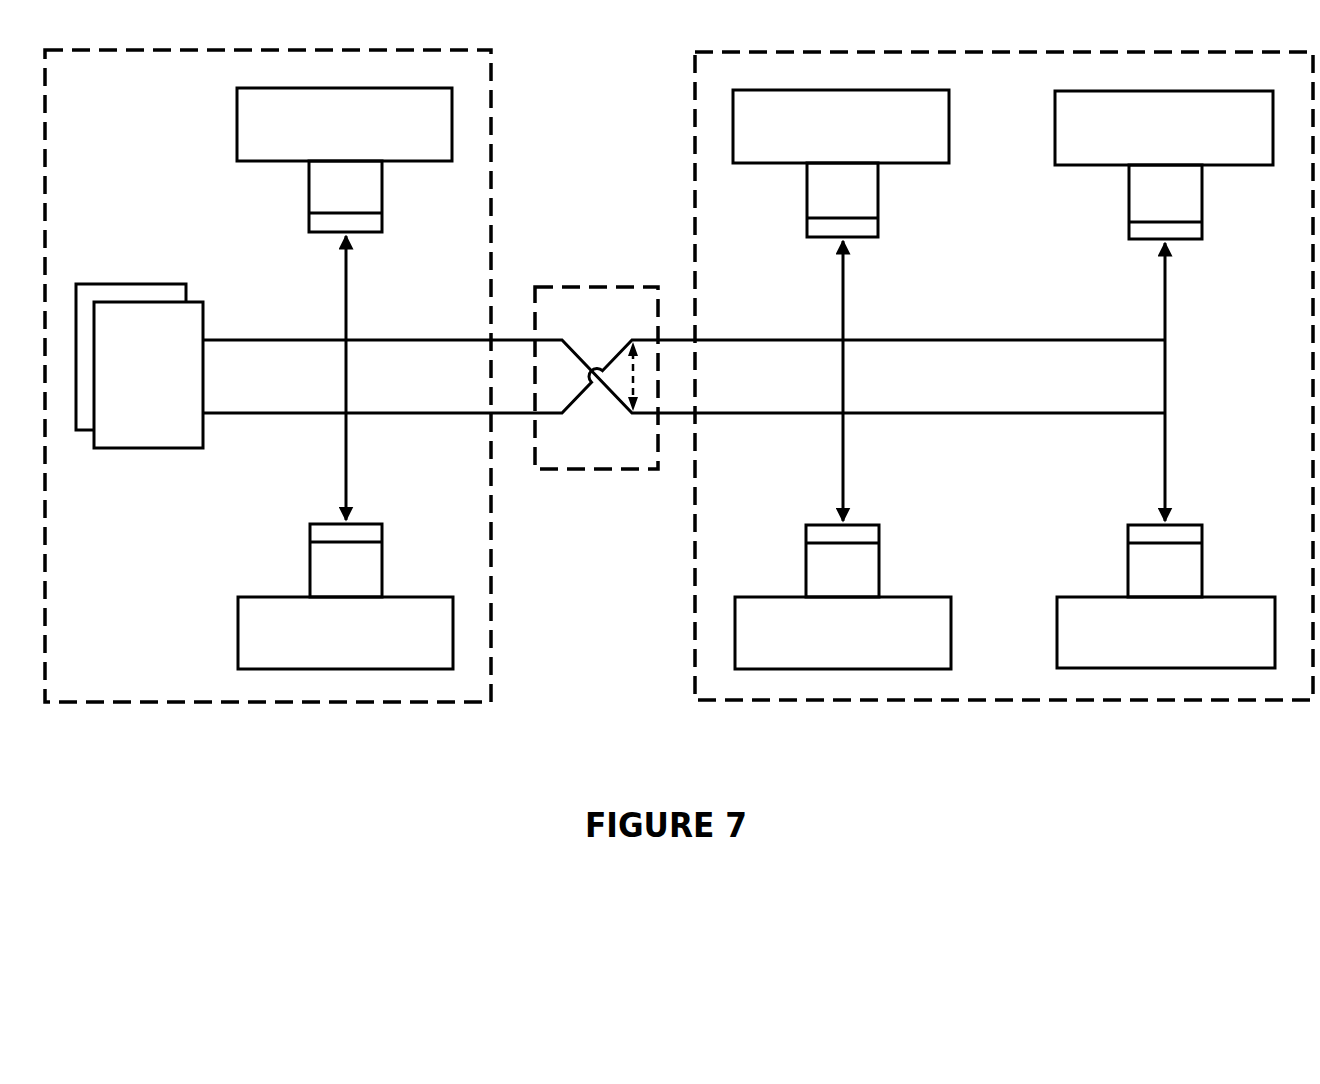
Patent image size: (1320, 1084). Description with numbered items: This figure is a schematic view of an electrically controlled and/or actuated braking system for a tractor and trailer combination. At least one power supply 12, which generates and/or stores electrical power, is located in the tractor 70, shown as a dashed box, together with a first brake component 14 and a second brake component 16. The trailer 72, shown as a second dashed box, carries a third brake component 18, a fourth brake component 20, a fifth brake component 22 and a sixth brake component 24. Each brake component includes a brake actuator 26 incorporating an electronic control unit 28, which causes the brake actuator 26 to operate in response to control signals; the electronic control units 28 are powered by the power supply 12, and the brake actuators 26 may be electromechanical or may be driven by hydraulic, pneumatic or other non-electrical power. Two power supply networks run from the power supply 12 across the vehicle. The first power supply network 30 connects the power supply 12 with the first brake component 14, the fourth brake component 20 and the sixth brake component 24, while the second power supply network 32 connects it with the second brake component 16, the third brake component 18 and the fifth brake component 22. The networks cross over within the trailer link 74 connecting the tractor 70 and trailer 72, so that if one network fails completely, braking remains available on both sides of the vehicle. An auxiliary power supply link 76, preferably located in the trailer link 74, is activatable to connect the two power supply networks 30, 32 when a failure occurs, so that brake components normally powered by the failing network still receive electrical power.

The power supply 12 is at (168, 312).
The first brake component 14 is at (263, 103).
The second brake component 16 is at (277, 650).
The third brake component 18 is at (780, 143).
The fourth brake component 20 is at (792, 615).
The fifth brake component 22 is at (1093, 143).
The sixth brake component 24 is at (1095, 615).
The brake actuator 26 is at (870, 570).
The electronic control unit 28 is at (862, 225).
The first power supply network 30 is at (684, 359).
The second power supply network 32 is at (684, 396).
The tractor 70 is at (491, 120).
The trailer 72 is at (695, 675).
The trailer link 74 is at (587, 287).
The auxiliary power supply link 76 is at (642, 385).